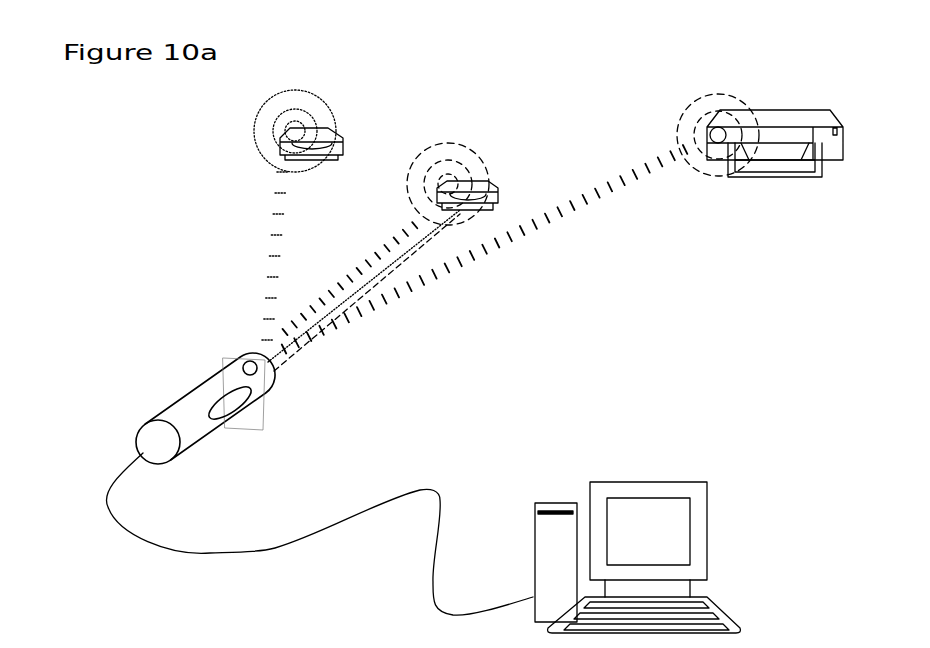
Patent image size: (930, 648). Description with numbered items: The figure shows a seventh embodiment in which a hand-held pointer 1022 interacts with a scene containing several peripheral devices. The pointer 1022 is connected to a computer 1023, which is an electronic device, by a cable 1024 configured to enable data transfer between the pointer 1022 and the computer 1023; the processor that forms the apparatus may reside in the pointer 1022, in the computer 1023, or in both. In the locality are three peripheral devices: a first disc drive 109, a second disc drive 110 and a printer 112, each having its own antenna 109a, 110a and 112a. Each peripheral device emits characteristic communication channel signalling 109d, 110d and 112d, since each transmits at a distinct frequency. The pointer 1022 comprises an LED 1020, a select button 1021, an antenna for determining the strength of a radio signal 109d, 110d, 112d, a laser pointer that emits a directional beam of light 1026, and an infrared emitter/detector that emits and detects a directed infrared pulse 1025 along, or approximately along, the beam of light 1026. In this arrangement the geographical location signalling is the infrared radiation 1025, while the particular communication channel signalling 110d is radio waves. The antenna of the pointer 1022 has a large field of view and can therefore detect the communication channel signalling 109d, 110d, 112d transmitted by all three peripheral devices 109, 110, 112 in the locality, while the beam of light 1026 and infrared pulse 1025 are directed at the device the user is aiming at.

The first disc drive 109 is at (310, 135).
The antenna of first disc drive 109a is at (293, 132).
The communication channel signalling of first disc drive 109d is at (275, 237).
The second disc drive 110 is at (483, 198).
The antenna of second disc drive 110a is at (452, 185).
The communication channel signalling of second disc drive 110d is at (380, 257).
The printer 112 is at (813, 127).
The antenna of printer 112a is at (718, 133).
The communication channel signalling of printer 112d is at (552, 223).
The LED 1020 is at (238, 361).
The select button 1021 is at (225, 407).
The pointer 1022 is at (197, 393).
The computer 1023 is at (703, 515).
The cable 1024 is at (387, 503).
The infrared pulse 1025 is at (340, 298).
The beam of light 1026 is at (352, 302).